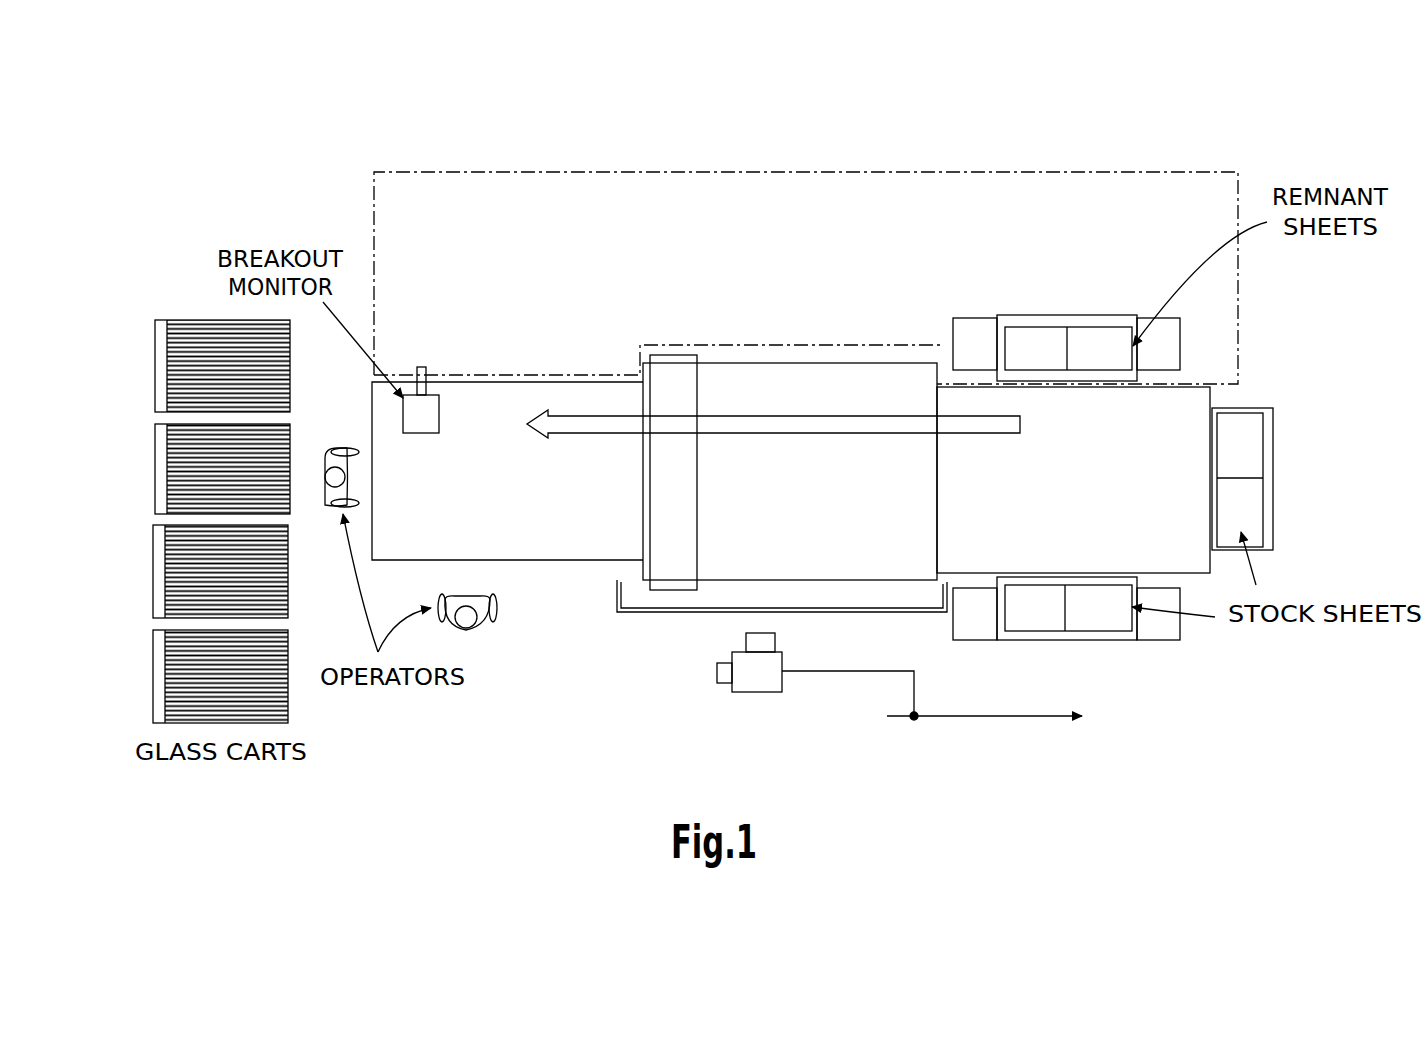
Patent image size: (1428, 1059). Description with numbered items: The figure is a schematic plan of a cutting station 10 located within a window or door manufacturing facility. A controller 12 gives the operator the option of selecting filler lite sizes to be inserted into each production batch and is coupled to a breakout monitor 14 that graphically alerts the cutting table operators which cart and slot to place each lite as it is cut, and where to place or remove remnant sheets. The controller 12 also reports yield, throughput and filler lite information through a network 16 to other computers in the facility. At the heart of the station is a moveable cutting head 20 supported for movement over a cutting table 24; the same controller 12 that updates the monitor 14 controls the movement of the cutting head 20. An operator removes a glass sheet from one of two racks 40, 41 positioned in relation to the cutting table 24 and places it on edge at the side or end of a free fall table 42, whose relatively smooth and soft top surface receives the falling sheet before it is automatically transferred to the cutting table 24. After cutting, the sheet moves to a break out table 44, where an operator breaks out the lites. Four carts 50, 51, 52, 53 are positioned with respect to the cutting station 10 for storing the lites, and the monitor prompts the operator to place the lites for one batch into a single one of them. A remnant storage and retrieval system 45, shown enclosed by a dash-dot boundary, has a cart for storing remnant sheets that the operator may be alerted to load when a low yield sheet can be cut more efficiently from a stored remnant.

The cutting station 10 is at (1022, 117).
The controller 12 is at (750, 666).
The breakout monitor 14 is at (428, 412).
The network 16 is at (925, 720).
The cutting head 20 is at (678, 397).
The cutting table 24 is at (897, 487).
The rack 40 is at (1240, 432).
The rack 41 is at (1093, 612).
The free fall table 42 is at (1160, 425).
The break out table 44 is at (548, 537).
The remnant storage and retrieval system 45 is at (1158, 172).
The cart 50 is at (195, 370).
The cart 51 is at (195, 470).
The cart 52 is at (180, 570).
The cart 53 is at (185, 665).